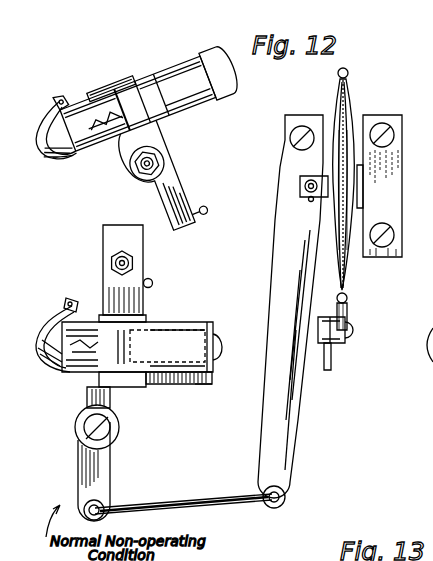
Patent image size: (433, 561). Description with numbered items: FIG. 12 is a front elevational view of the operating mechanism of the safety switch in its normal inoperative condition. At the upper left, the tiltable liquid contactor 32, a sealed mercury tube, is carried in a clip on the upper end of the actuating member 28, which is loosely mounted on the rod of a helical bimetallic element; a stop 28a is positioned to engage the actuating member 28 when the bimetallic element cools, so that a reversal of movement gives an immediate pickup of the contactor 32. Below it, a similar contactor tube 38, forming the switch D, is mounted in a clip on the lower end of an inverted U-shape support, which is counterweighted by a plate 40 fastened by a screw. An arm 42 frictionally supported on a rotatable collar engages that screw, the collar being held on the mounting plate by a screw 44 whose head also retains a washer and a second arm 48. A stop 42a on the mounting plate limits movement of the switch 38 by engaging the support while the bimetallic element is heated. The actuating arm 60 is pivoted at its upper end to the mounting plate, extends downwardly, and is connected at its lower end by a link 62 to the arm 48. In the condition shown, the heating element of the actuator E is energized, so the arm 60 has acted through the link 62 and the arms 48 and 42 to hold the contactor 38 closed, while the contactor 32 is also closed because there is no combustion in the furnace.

The upper cylinder unit F is at (190, 52).
The tiltable liquid contactor 32 is at (138, 74).
The actuating member 28 is at (189, 197).
The stop 28a is at (207, 211).
The actuator E is at (361, 112).
The actuating arm 60 is at (300, 404).
The arm 42 is at (88, 397).
The stop 42a is at (153, 283).
The switch D is at (209, 318).
The contactor tube 38 is at (155, 361).
The plate 40 is at (200, 384).
The screw 44 is at (110, 433).
The second arm 48 is at (85, 466).
The link 62 is at (158, 503).